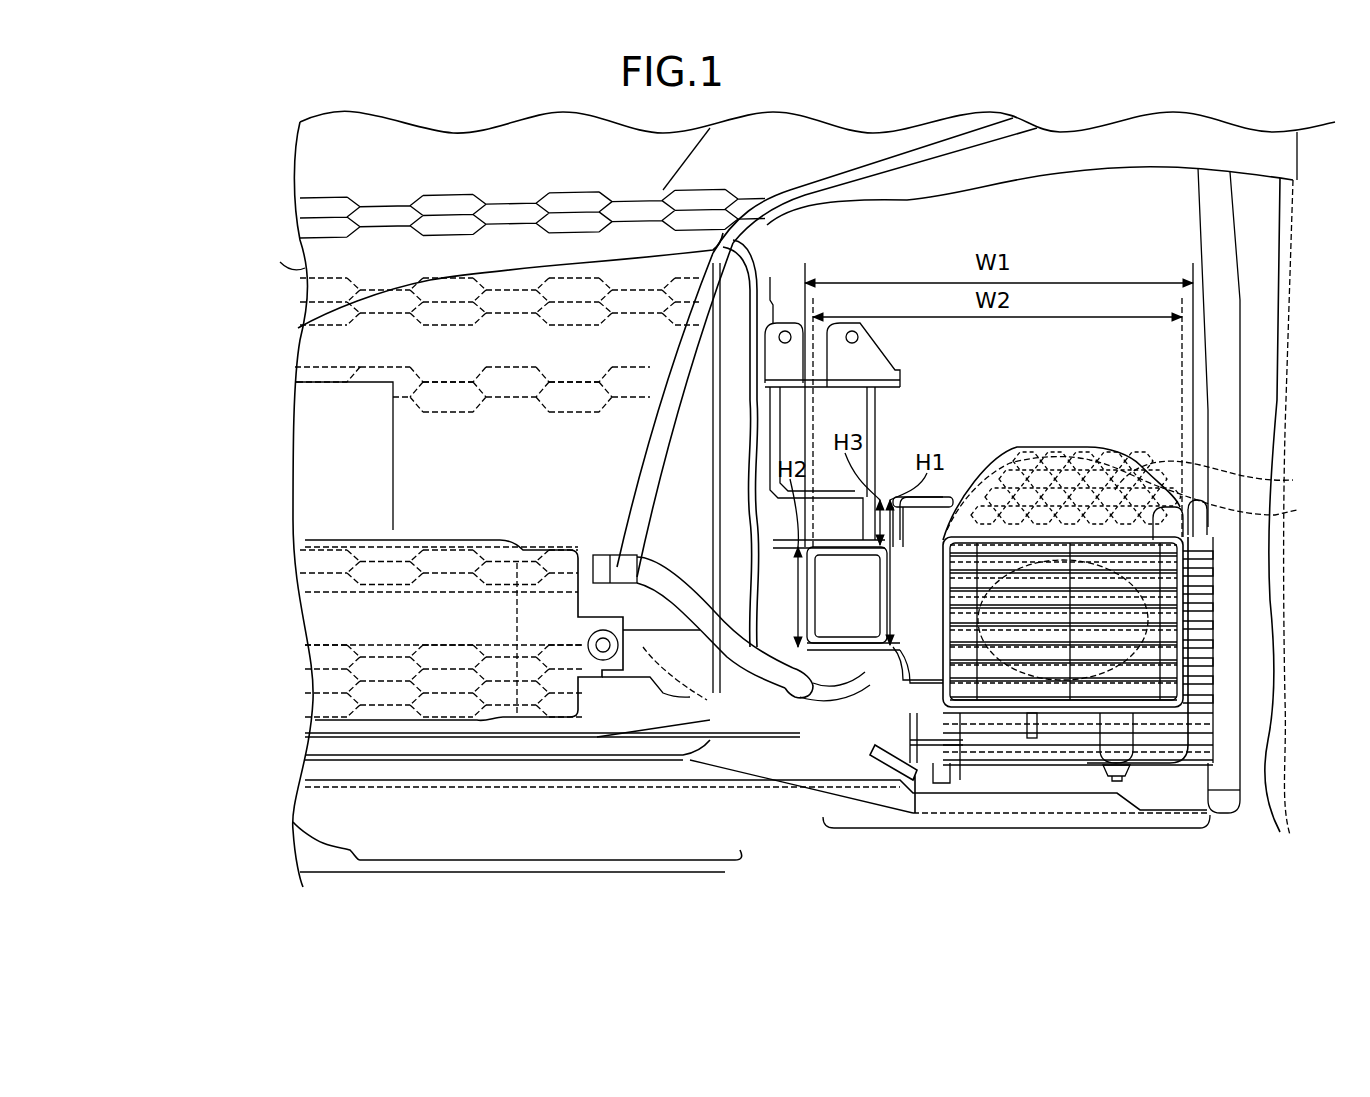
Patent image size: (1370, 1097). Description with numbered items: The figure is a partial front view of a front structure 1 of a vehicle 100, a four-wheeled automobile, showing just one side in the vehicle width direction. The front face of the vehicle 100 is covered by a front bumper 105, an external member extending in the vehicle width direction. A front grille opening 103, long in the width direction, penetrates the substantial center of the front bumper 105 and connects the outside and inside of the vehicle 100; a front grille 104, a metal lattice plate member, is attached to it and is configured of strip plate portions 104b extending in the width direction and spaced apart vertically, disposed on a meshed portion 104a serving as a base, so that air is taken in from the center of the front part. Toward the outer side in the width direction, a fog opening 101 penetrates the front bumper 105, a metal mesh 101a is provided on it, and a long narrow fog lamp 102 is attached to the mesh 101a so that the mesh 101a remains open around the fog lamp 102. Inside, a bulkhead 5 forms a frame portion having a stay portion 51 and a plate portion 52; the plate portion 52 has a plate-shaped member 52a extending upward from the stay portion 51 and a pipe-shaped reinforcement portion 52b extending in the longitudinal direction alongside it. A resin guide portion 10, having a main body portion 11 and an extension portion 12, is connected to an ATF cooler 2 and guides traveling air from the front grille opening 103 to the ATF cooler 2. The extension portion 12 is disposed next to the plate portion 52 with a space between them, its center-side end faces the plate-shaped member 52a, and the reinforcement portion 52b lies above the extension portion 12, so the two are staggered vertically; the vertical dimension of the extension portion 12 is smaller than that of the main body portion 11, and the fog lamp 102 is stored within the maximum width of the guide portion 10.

The front structure 1 is at (286, 110).
The vehicle 100 is at (889, 113).
The front bumper 105 is at (1083, 148).
The guide portion 10 is at (1268, 790).
The front grille opening 103 is at (313, 203).
The front grille 104 is at (195, 245).
The meshed portion 104a is at (320, 300).
The strip plate portions 104b is at (327, 268).
The bulkhead 5 is at (847, 905).
The stay portion 51 is at (723, 690).
The plate portion 52 is at (757, 693).
The plate-shaped member 52a is at (757, 523).
The reinforcement portion 52b is at (757, 395).
The extension portion 12 is at (850, 650).
The fog lamp 102 is at (800, 690).
The main body portion 11 is at (880, 675).
The ATF cooler 2 is at (1212, 672).
The fog opening 101 is at (1293, 480).
The mesh 101a is at (1297, 510).